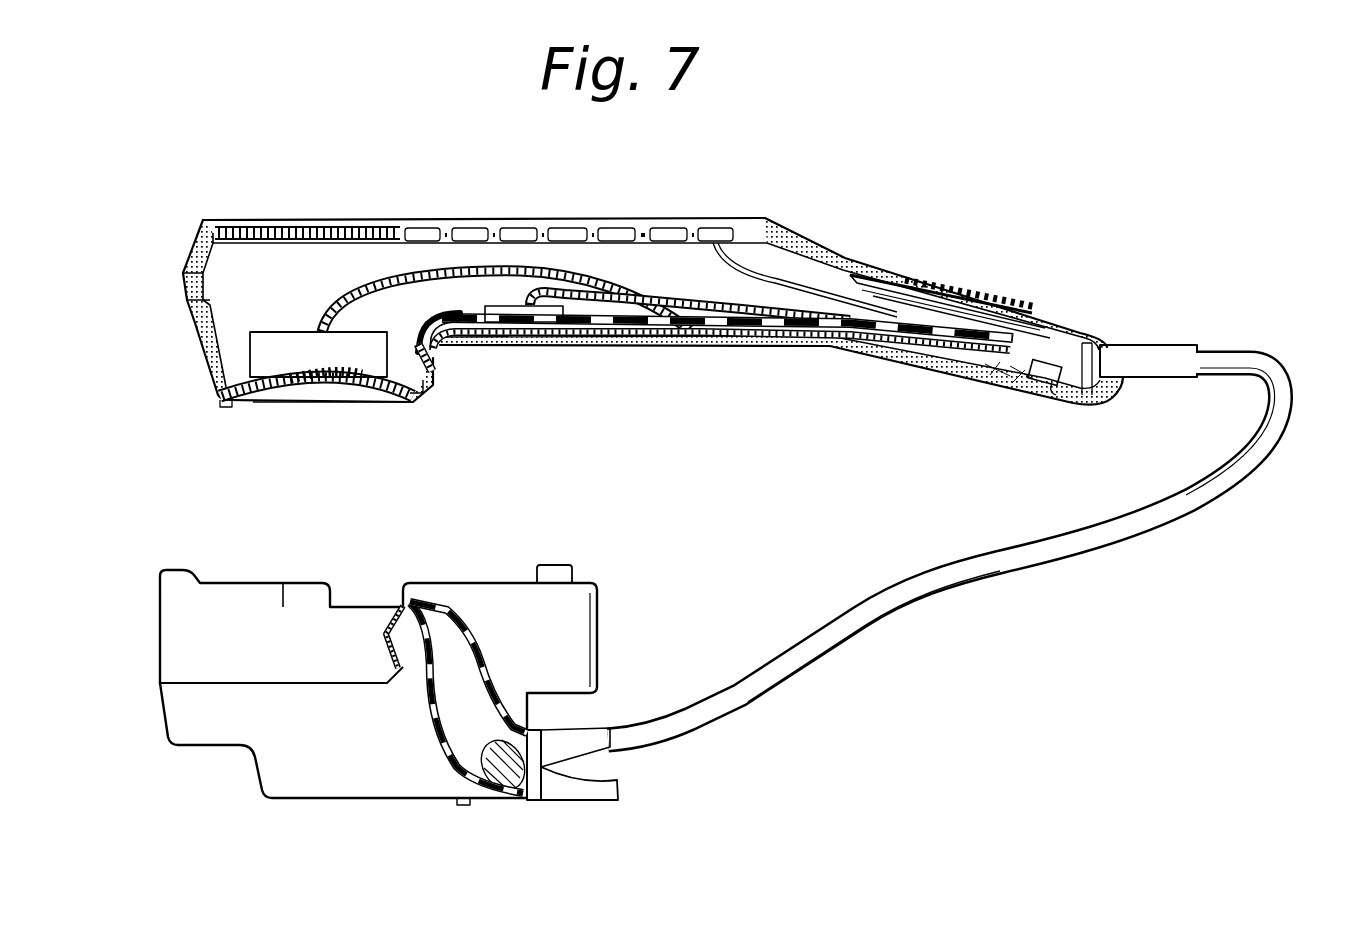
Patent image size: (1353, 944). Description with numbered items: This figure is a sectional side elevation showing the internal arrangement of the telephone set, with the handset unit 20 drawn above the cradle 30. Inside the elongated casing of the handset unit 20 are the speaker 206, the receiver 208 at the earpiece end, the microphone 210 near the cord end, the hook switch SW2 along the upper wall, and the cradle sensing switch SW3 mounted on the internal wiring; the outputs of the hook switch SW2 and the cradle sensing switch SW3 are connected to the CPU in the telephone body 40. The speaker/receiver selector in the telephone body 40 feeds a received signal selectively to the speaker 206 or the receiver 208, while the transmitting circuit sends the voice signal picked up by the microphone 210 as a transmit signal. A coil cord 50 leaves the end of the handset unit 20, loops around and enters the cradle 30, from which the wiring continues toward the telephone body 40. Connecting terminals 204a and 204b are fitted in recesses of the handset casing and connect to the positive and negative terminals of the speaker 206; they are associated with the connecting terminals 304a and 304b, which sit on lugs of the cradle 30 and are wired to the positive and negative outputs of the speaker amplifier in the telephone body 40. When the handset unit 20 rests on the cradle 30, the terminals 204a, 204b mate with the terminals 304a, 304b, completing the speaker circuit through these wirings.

The handset unit 20 is at (690, 296).
The hook switch SW2 is at (705, 232).
The cradle sensing switch SW3 is at (498, 312).
The speaker 206 is at (845, 260).
The receiver 208 is at (267, 356).
The connecting terminal 204a is at (435, 362).
The connecting terminal 204b is at (520, 422).
The microphone 210 is at (1067, 400).
The cradle 30 is at (389, 651).
The connecting terminal 304a is at (383, 630).
The connecting terminal 304b is at (477, 629).
The coil cord 50 is at (933, 568).
The telephone body 40 is at (633, 790).